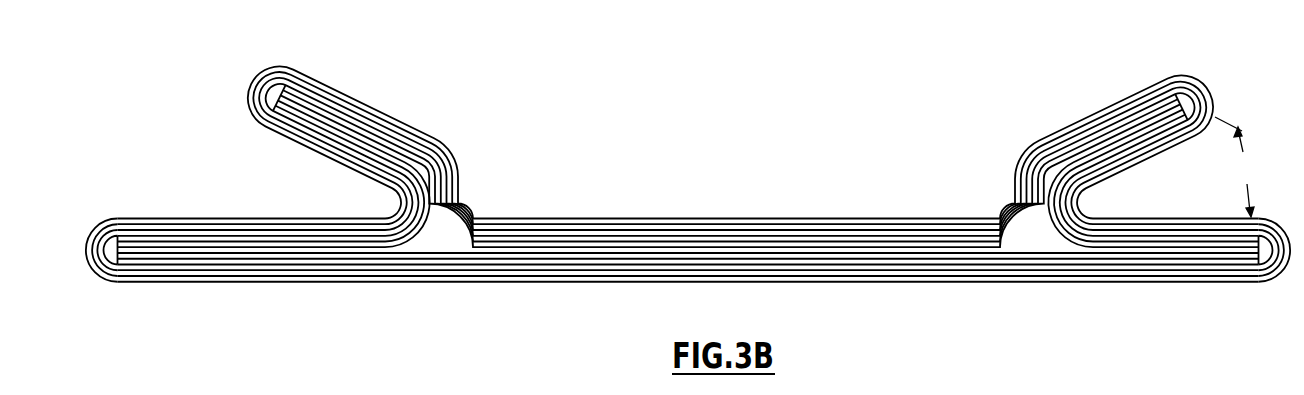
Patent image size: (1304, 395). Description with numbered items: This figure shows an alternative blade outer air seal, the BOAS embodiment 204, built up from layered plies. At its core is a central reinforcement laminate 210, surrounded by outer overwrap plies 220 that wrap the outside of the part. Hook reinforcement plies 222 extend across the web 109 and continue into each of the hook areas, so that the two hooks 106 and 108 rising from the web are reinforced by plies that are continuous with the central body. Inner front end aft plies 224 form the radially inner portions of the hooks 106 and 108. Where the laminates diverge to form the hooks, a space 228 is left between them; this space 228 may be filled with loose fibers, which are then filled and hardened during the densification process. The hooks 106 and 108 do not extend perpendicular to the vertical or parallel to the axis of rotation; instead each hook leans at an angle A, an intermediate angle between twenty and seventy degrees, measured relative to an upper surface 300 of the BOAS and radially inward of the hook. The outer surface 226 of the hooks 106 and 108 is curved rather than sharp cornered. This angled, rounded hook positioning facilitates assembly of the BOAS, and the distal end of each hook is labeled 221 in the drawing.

The upper surface 300 is at (688, 258).
The hook 106 is at (367, 101).
The hook 108 is at (1100, 107).
The web 109 is at (722, 283).
The BOAS embodiment 204 is at (1010, 97).
The central reinforcement laminate 210 is at (418, 259).
The outer overwrap plies 220 is at (530, 266).
The distal end of loop 221 is at (1213, 104).
The hook reinforcement plies 222 is at (383, 131).
The inner front end aft plies 224 is at (339, 136).
The outer surface 226 is at (439, 158).
The space 228 is at (1047, 235).
The angle A is at (1237, 167).